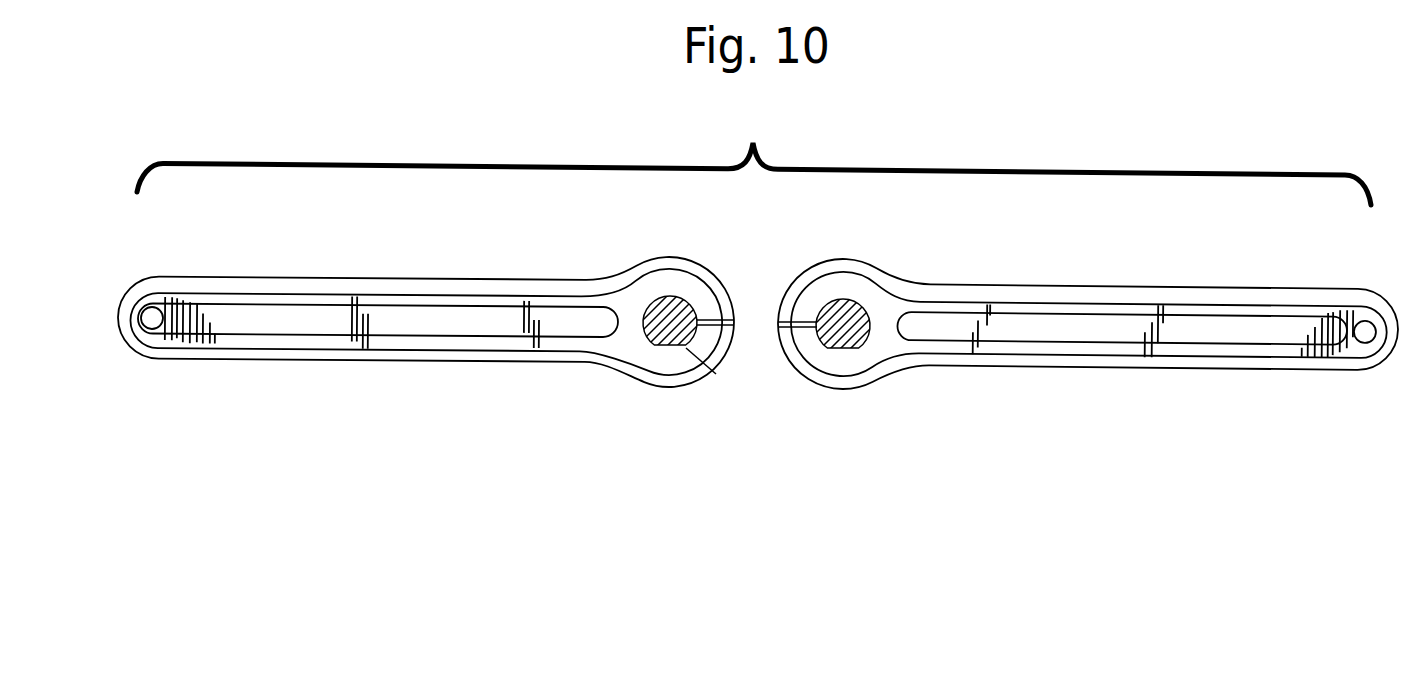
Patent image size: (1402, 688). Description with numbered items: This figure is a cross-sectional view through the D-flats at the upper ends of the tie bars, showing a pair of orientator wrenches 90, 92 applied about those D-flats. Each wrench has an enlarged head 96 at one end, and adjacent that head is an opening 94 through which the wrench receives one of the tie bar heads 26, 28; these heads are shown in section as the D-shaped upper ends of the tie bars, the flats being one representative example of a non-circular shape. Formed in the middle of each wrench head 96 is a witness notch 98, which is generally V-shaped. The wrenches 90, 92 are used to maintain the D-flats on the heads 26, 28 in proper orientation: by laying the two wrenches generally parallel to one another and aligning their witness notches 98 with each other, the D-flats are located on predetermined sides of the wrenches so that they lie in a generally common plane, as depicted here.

The head 26 is at (830, 322).
The head 28 is at (657, 323).
The orientator wrench 90 is at (555, 362).
The orientator wrench 92 is at (1005, 366).
The opening 94 is at (716, 374).
The enlarged head 96 is at (636, 268).
The witness notch 98 is at (709, 316).